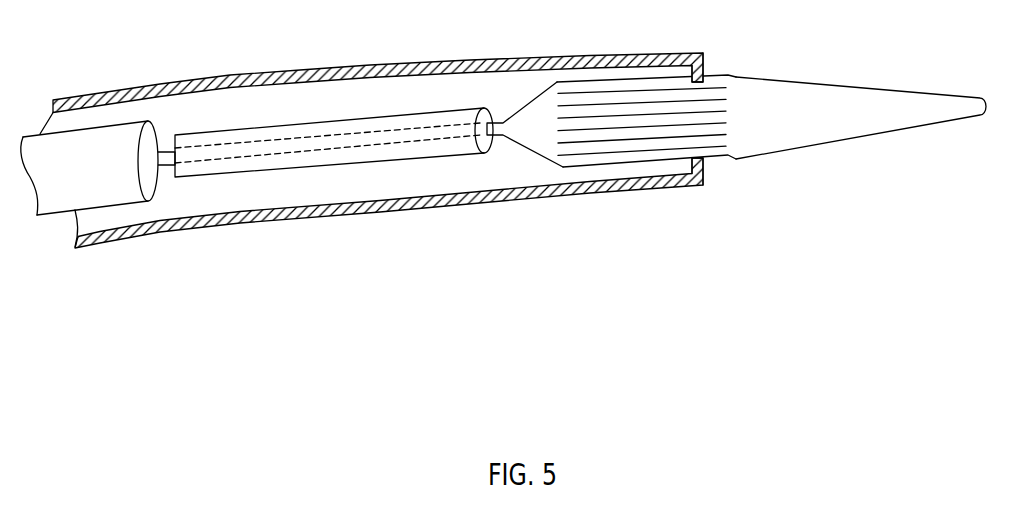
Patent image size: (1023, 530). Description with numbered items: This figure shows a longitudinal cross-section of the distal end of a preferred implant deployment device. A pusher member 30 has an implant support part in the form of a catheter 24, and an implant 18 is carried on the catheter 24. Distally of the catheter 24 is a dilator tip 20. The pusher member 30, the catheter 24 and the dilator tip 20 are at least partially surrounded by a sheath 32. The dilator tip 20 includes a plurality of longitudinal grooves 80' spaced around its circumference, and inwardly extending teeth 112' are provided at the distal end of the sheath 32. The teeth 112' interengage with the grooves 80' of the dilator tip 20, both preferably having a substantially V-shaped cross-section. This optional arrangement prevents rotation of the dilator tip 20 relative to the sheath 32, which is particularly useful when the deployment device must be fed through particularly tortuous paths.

The implant 18 is at (303, 131).
The dilator tip 20 is at (843, 97).
The catheter 24 is at (499, 124).
The pusher member 30 is at (84, 133).
The sheath 32 is at (148, 86).
The longitudinal grooves 80' is at (646, 90).
The inwardly extending teeth 112' is at (729, 100).